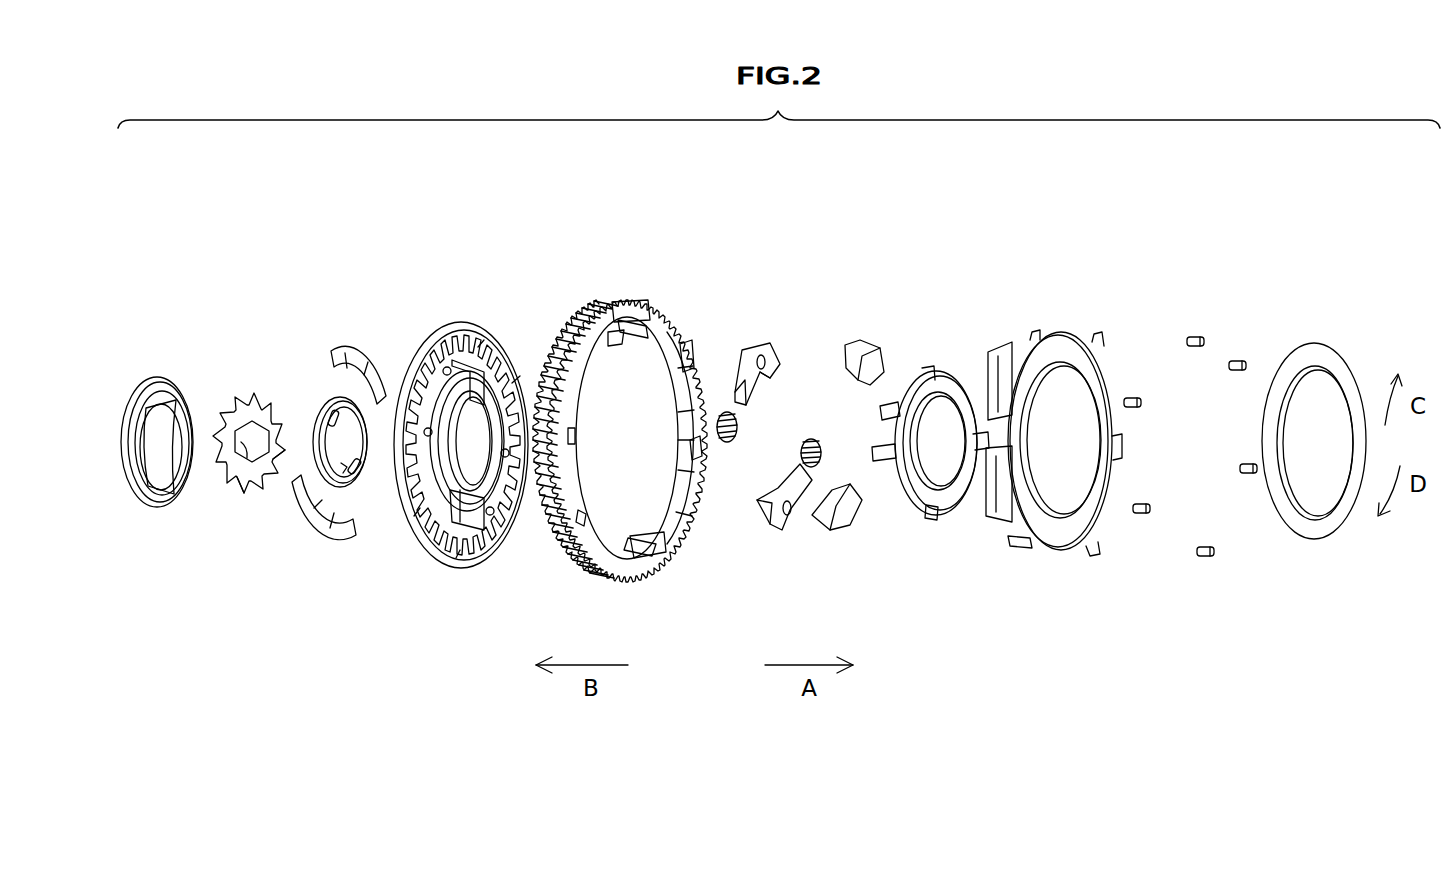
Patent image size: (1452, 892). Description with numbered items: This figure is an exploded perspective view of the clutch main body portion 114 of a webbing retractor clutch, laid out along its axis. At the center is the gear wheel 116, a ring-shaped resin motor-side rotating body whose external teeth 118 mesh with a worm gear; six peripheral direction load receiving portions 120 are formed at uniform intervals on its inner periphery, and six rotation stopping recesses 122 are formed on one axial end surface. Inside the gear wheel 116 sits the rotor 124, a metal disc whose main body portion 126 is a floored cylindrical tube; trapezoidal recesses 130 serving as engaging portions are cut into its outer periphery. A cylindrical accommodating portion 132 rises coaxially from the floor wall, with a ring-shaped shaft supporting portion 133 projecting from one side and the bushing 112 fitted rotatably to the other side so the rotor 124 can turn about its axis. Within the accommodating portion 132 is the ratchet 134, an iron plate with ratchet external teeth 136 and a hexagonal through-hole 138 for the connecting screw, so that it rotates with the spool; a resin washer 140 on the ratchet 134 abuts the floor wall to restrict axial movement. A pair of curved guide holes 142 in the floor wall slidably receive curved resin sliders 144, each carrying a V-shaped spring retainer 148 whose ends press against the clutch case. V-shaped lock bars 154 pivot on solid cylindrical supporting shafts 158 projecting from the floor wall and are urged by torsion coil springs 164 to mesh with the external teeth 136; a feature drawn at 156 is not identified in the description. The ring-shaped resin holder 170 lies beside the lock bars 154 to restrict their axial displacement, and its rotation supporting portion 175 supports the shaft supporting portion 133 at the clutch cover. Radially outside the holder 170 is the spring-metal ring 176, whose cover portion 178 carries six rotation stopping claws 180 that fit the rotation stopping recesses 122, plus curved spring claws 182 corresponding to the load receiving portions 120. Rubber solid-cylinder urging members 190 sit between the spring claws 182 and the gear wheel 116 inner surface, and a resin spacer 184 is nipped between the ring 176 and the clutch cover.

The bushing 112 is at (154, 378).
The clutch main body portion 114 is at (785, 210).
The gear wheel 116 is at (633, 418).
The external teeth 118 is at (570, 322).
The peripheral direction load receiving portions 120 is at (610, 306).
The rotation stopping recesses 122 is at (648, 336).
The rotor 124 is at (458, 440).
The main body portion 126 is at (474, 530).
The recesses 130 is at (504, 392).
The accommodating portion 132 is at (440, 502).
The shaft supporting portion 133 is at (485, 380).
The ratchet 134 is at (248, 435).
The external teeth 136 is at (278, 406).
The through-hole 138 is at (242, 458).
The washer 140 is at (318, 440).
The guide holes 142 is at (470, 360).
The sliders 144 is at (870, 354).
The retainer 148 is at (331, 360).
The lock bars 154 is at (773, 438).
The pawl tip 156 is at (763, 380).
The supporting shafts 158 is at (446, 367).
The torsion coil springs 164 is at (735, 437).
The holder 170 is at (936, 423).
The rotation supporting portion 175 is at (927, 384).
The ring 176 is at (1059, 436).
The cover portion 178 is at (1097, 402).
The rotation stopping claws 180 is at (1035, 333).
The spring claws 182 is at (1001, 349).
The spacer 184 is at (1312, 352).
The urging members 190 is at (1237, 360).